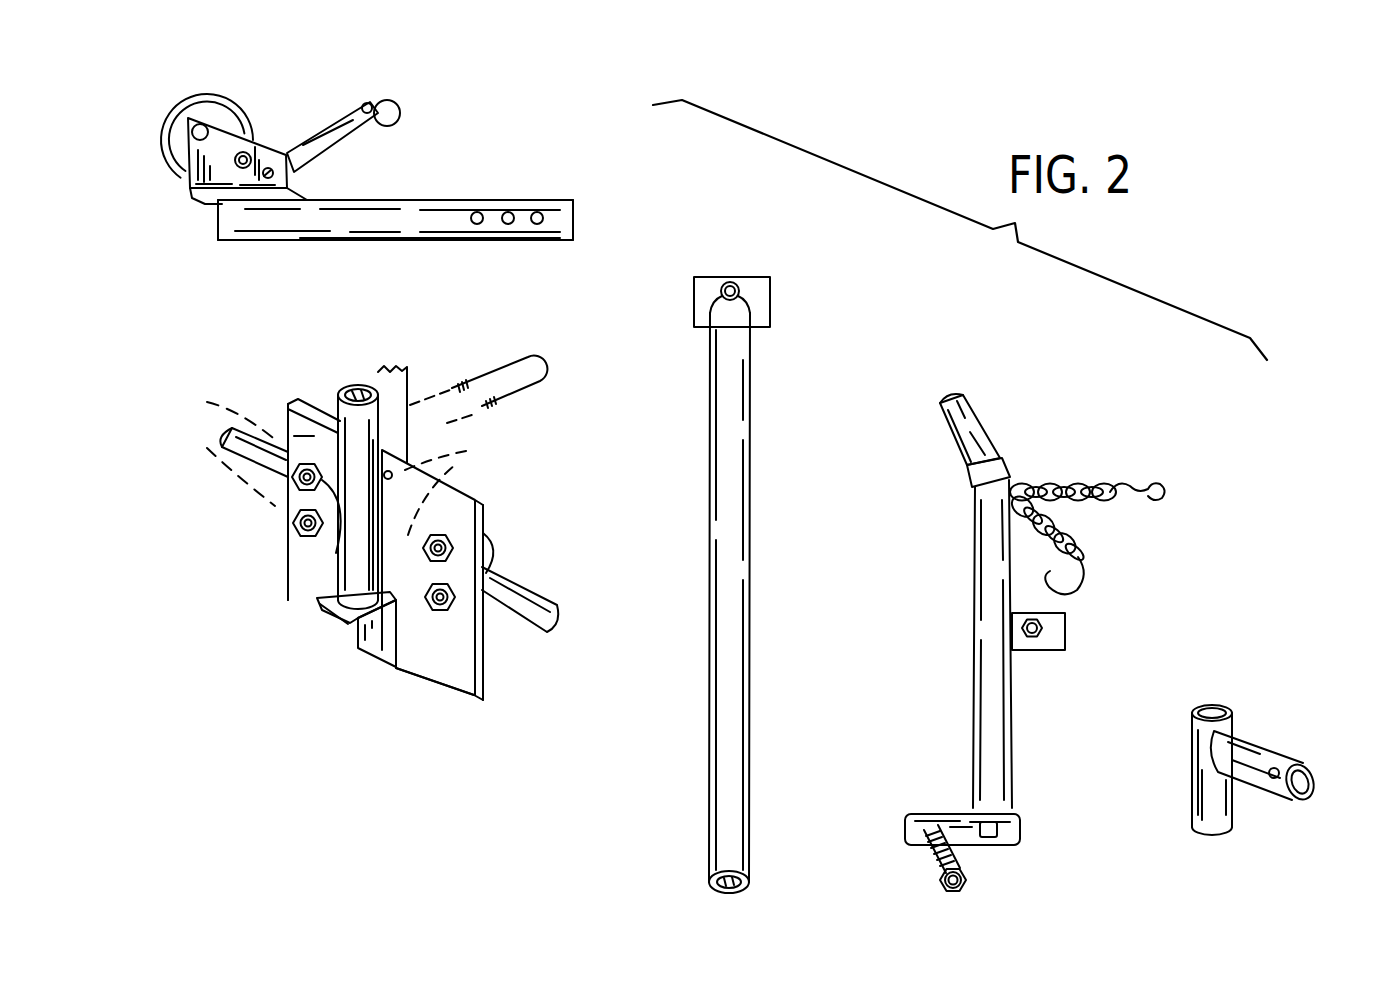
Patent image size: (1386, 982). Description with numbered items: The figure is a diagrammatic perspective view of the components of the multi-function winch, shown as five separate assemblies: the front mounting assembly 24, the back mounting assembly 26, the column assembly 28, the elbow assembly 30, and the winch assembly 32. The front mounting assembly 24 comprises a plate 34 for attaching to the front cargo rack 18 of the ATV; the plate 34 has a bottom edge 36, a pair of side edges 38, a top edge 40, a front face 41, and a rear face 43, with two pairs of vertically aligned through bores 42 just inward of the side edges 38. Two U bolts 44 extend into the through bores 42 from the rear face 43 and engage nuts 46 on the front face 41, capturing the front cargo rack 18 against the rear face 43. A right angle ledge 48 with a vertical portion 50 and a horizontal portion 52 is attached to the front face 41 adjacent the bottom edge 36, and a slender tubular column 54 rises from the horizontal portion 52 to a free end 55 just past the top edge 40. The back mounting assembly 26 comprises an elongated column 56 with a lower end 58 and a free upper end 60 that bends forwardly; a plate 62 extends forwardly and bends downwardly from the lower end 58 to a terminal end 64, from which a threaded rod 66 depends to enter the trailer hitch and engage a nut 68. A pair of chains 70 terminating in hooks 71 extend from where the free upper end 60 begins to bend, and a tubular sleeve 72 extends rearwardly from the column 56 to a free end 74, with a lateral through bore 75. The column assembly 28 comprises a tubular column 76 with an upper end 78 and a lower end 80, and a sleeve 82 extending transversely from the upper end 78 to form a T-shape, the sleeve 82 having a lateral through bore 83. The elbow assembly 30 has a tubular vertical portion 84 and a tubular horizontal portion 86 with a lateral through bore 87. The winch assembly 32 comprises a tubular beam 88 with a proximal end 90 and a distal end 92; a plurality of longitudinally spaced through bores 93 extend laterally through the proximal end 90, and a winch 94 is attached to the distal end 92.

The front cargo rack 18 is at (558, 618).
The front mounting assembly 24 is at (259, 420).
The back mounting assembly 26 is at (1010, 434).
The column assembly 28 is at (667, 252).
The elbow assembly 30 is at (1280, 717).
The winch assembly 32 is at (455, 168).
The plate 34 is at (470, 490).
The bottom edge 36 is at (442, 668).
The side edges 38 is at (288, 560).
The top edge 40 is at (306, 403).
The front face 41 is at (302, 436).
The through bores 42 is at (334, 458).
The rear face 43 is at (338, 621).
The U bolts 44 is at (515, 356).
The nuts 46 is at (322, 478).
The right angle ledge 48 is at (370, 630).
The vertical portion 50 is at (383, 643).
The horizontal portion 52 is at (336, 553).
The column 54 is at (356, 386).
The free end 55 is at (380, 392).
The column 56 is at (972, 553).
The lower end 58 is at (1016, 810).
The free upper end 60 is at (952, 398).
The plate 62 is at (998, 846).
The terminal end 64 is at (928, 826).
The threaded rod 66 is at (958, 858).
The nut 68 is at (960, 895).
The chains 70 is at (1050, 537).
The hooks 71 is at (1157, 482).
The sleeve 72 is at (1045, 604).
The free end 74 is at (1073, 643).
The through bore 75 is at (1070, 623).
The column 76 is at (705, 690).
The upper end 78 is at (770, 330).
The lower end 80 is at (748, 882).
The sleeve 82 is at (720, 281).
The through bore 83 is at (738, 286).
The vertical portion 84 is at (1223, 803).
The horizontal portion 86 is at (1312, 770).
The through bore 87 is at (1279, 779).
The beam 88 is at (424, 197).
The proximal end 90 is at (573, 222).
The distal end 92 is at (218, 221).
The through bores 93 is at (536, 212).
The winch 94 is at (171, 95).